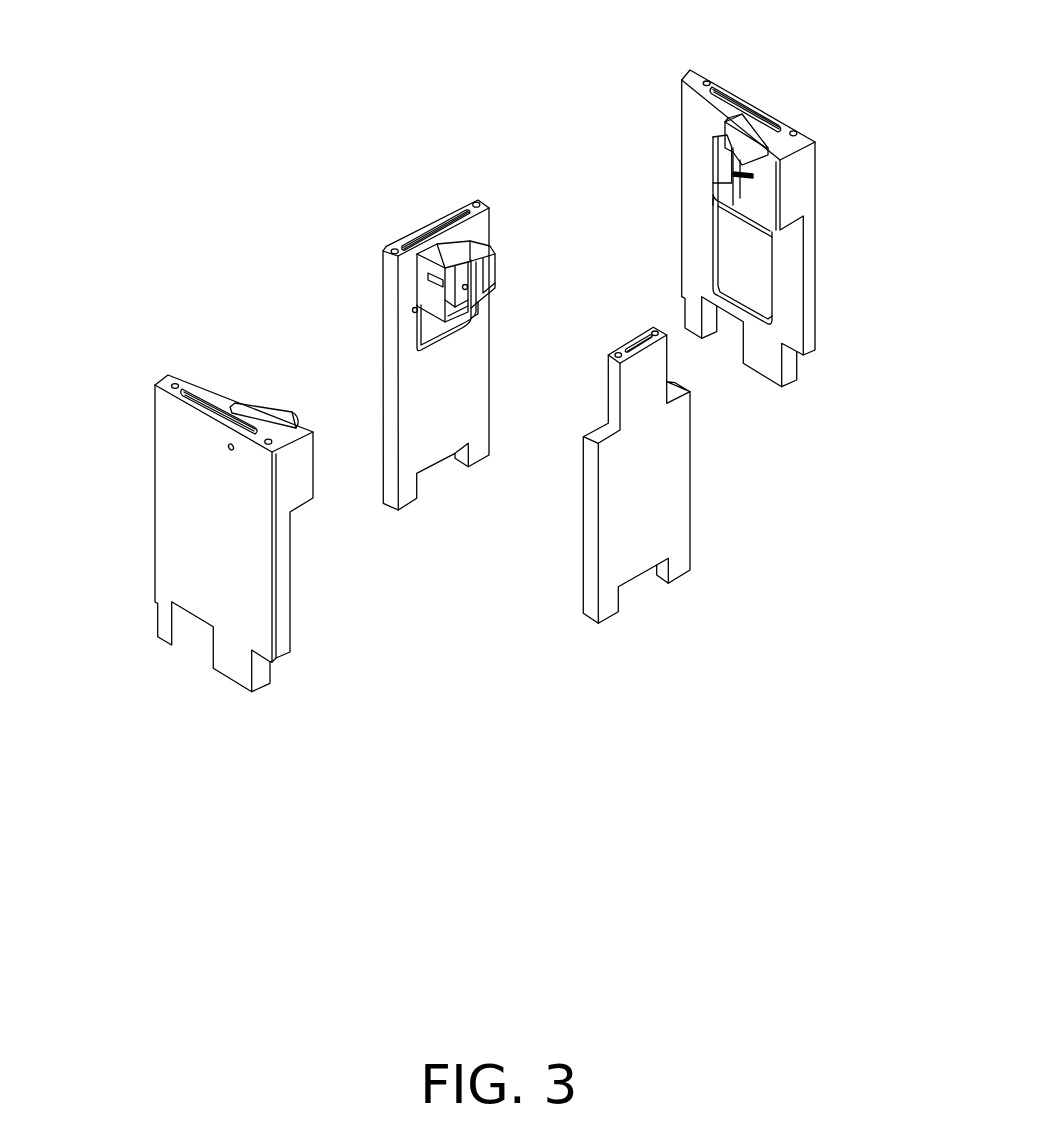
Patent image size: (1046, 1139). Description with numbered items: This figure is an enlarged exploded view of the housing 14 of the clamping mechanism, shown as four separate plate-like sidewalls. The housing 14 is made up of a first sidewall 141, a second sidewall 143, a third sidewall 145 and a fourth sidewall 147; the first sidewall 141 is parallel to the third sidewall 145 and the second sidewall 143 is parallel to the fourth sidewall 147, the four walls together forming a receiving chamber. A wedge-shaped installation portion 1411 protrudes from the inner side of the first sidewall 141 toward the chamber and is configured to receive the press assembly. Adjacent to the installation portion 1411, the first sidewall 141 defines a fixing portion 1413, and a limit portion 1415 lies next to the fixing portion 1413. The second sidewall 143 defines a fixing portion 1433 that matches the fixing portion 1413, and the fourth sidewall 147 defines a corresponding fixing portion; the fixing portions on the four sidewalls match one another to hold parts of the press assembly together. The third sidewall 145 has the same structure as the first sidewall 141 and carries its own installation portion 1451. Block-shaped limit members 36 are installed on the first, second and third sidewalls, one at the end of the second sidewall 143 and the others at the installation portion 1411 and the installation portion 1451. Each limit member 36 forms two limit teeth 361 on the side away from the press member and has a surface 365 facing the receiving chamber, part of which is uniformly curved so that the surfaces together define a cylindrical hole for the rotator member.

The housing 14 is at (750, 90).
The first sidewall 141 is at (697, 137).
The installation portion 1411 is at (808, 137).
The fixing portion 1413 is at (755, 212).
The limit portion 1415 is at (740, 256).
The second sidewall 143 is at (392, 284).
The fixing portion 1433 is at (425, 332).
The third sidewall 145 is at (200, 540).
The installation portion 1451 is at (278, 433).
The fourth sidewall 147 is at (670, 480).
The limit member 36 is at (452, 247).
The limit teeth 361 is at (448, 316).
The surface 365 is at (483, 277).